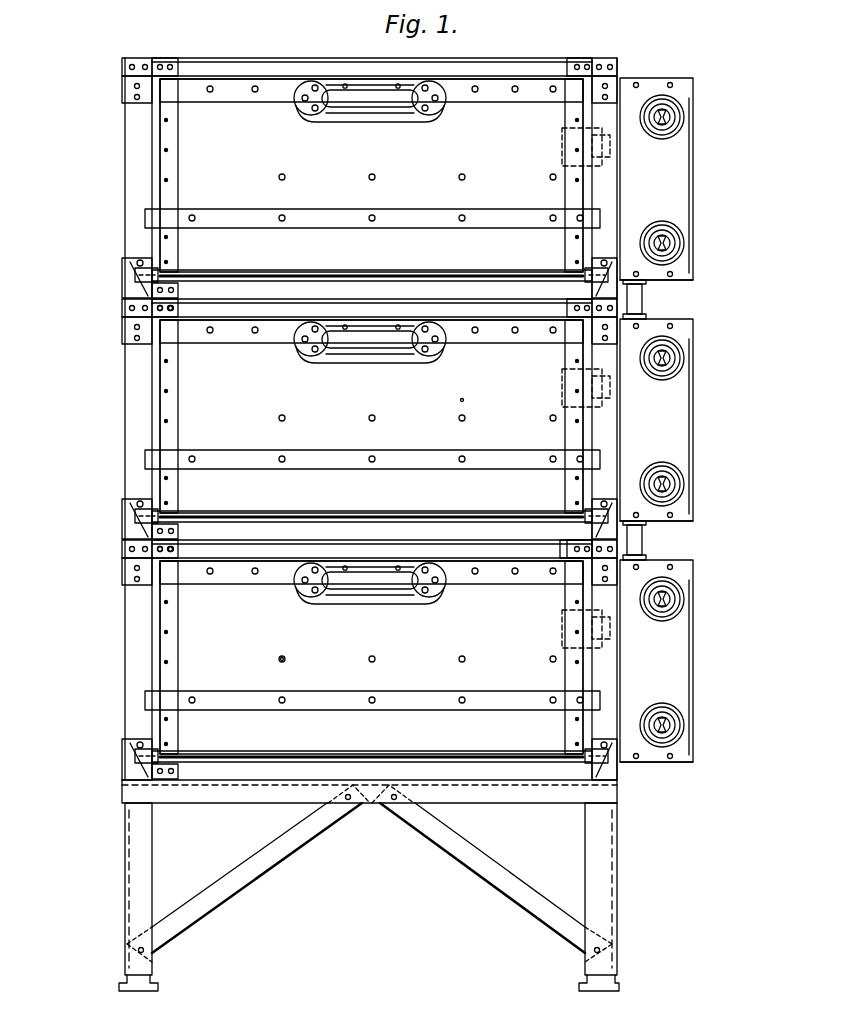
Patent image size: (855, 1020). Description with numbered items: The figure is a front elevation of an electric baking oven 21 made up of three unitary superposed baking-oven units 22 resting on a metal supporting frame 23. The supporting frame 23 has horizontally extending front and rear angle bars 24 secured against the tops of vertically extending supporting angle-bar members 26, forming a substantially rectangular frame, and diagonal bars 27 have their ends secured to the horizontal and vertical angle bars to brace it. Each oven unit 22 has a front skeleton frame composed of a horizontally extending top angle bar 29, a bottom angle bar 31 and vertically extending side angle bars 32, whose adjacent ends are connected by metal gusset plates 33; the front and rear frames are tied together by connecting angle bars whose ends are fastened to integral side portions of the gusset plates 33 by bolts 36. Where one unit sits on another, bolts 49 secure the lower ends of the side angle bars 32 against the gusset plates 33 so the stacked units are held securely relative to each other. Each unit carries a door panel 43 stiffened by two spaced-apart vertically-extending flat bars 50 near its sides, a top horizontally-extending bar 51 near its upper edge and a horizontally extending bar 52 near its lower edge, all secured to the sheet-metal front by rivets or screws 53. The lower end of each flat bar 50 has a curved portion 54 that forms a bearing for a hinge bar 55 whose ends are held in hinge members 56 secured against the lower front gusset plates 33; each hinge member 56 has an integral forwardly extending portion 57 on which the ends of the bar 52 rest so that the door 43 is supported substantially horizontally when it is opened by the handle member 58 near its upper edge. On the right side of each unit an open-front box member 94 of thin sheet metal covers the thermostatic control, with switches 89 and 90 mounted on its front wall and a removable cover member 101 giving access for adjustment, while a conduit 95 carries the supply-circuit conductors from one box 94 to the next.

The electric baking oven 21 is at (58, 356).
The baking-oven unit 22 is at (185, 162).
The supporting frame 23 is at (600, 812).
The front and rear angle bar 24 is at (470, 804).
The supporting angle-bar member 26 is at (147, 858).
The brace bar 27 is at (240, 886).
The top angle bar 29 is at (497, 72).
The bottom angle bar 31 is at (492, 292).
The side angle bar 32 is at (138, 140).
The gusset plate 33 is at (130, 62).
The bolt 36 is at (122, 66).
The door panel 43 is at (442, 505).
The bolt 49 is at (126, 310).
The vertically-extending flat bar 50 is at (172, 196).
The top horizontally-extending bar 51 is at (262, 585).
The horizontally extending bar 52 is at (246, 712).
The rivets or screws 53 is at (168, 120).
The curved portion 54 is at (178, 276).
The hinge bar 55 is at (218, 282).
The hinge member 56 is at (122, 280).
The forwardly extending portion 57 is at (180, 291).
The handle member 58 is at (352, 364).
The switch 89 is at (676, 107).
The switch 90 is at (676, 249).
The open-front box member 94 is at (680, 273).
The conduit 95 is at (644, 296).
The removable cover member 101 is at (693, 190).